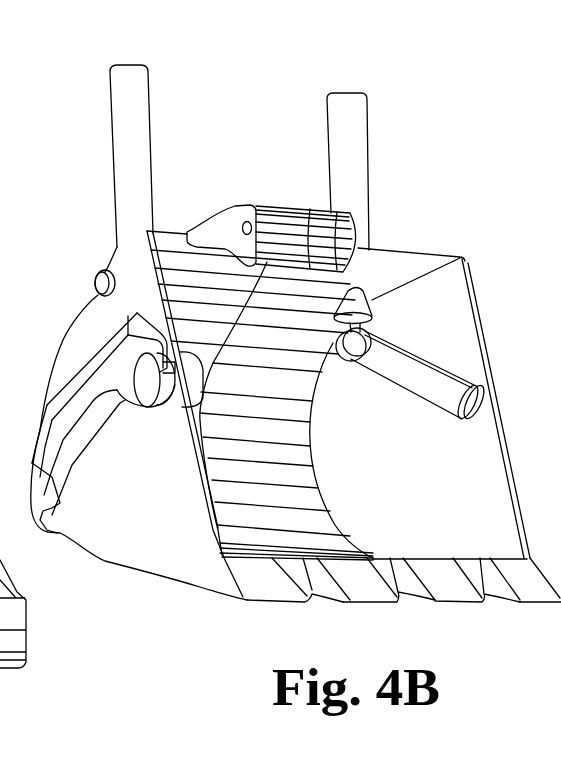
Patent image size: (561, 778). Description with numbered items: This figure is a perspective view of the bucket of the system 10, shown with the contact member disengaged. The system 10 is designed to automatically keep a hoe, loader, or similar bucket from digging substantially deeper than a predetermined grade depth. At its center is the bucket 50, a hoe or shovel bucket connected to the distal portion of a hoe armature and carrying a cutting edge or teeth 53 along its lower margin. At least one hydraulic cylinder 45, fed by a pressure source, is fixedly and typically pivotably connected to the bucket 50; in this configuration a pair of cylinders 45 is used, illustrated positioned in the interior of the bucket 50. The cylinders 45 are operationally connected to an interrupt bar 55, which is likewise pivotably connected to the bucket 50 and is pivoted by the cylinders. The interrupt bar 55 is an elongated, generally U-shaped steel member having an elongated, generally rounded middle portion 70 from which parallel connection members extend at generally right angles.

The system 10 is at (515, 270).
The hydraulic cylinder 45 is at (146, 128).
The bucket 50 is at (298, 300).
The teeth 53 is at (5, 576).
The interrupt bar 55 is at (72, 362).
The middle portion 70 is at (387, 362).